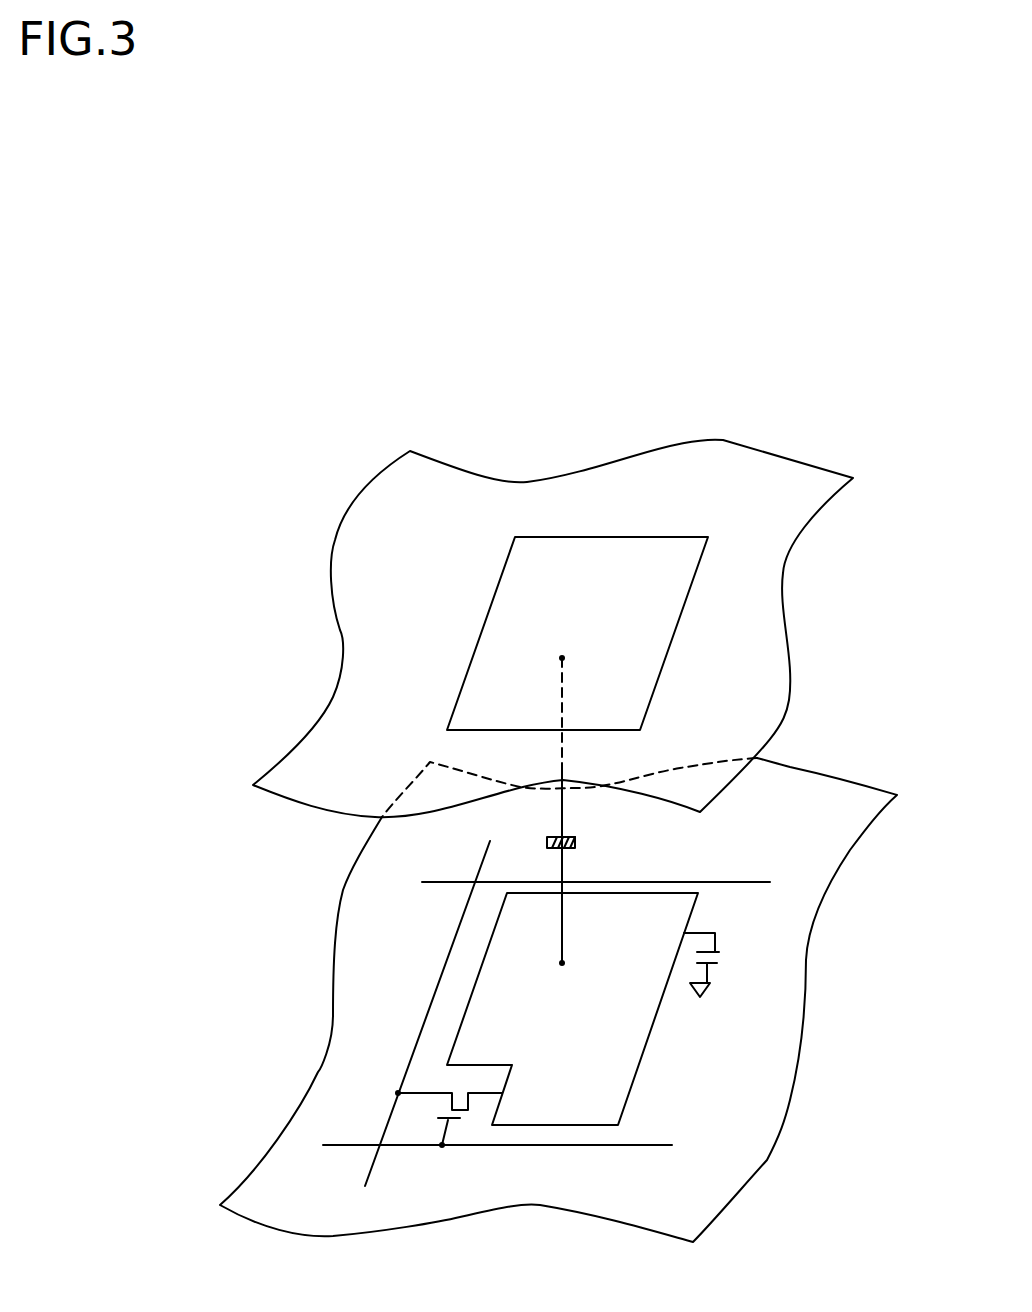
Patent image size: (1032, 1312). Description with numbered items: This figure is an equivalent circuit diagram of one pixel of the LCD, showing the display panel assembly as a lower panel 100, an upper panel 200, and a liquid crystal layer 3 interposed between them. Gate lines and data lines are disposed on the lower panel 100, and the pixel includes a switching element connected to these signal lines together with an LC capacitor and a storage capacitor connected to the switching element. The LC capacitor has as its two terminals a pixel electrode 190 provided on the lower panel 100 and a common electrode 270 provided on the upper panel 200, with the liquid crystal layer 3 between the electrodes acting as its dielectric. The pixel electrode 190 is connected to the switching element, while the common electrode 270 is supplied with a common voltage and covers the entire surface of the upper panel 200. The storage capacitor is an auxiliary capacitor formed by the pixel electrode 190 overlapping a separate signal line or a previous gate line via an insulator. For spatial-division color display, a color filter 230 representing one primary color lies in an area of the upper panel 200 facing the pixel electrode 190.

The liquid crystal layer 3 is at (240, 894).
The lower panel 100 is at (829, 977).
The pixel electrode 190 is at (640, 1062).
The upper panel 200 is at (588, 629).
The color filter 230 is at (670, 648).
The common electrode 270 is at (781, 600).